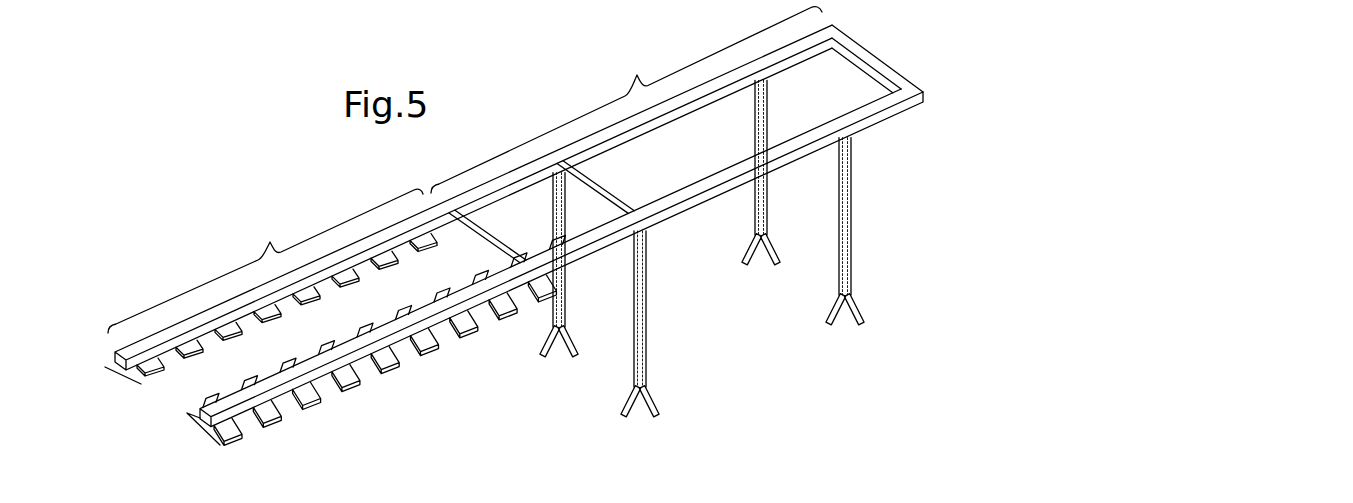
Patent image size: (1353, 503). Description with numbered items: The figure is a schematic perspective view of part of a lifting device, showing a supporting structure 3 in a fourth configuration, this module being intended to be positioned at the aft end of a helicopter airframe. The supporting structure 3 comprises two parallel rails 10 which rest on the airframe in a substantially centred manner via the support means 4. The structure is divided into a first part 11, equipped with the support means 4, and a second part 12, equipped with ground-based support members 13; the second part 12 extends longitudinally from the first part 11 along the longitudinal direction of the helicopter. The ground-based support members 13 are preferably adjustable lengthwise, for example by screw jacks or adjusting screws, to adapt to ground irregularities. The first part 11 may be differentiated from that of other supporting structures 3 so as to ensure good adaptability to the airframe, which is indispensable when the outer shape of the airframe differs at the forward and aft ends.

The supporting structure 3 is at (903, 63).
The support means 4 is at (397, 360).
The parallel rails 10 is at (168, 353).
The first part 11 is at (265, 261).
The second part 12 is at (626, 100).
The ground-based support members 13 is at (566, 290).